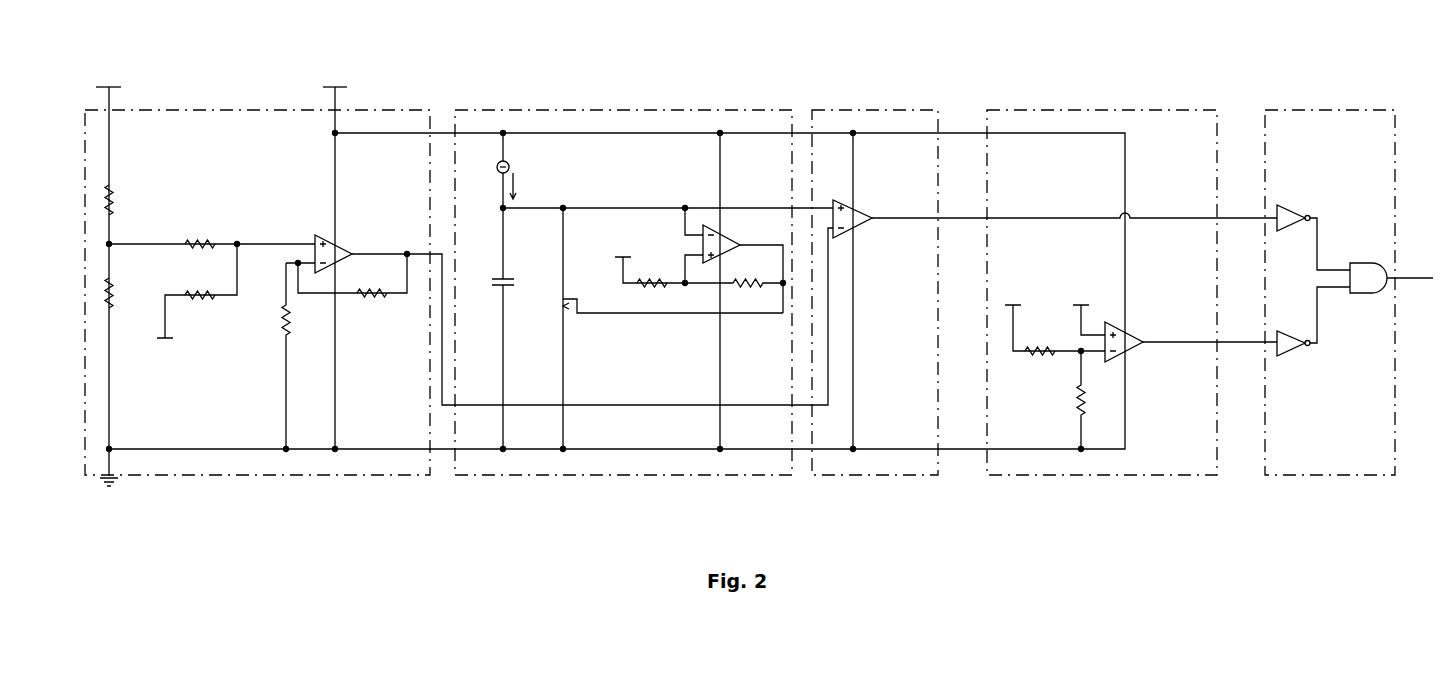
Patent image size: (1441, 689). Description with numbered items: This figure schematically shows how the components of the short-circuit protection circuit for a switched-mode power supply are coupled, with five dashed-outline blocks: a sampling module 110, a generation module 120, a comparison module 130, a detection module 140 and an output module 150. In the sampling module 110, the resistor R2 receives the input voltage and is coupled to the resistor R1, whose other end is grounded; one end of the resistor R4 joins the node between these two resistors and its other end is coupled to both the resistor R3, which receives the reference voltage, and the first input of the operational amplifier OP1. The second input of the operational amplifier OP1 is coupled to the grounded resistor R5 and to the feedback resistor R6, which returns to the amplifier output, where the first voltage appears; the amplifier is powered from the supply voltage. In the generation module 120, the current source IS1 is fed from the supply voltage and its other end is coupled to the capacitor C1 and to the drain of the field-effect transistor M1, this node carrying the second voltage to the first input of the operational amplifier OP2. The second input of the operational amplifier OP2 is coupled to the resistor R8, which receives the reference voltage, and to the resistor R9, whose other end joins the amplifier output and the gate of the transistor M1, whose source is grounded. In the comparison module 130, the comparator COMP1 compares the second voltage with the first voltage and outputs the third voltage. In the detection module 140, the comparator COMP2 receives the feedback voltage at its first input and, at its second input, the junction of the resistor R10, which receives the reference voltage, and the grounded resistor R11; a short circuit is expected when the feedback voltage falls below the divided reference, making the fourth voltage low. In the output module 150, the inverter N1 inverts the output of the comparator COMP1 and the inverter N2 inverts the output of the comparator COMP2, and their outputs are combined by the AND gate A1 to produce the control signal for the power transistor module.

The sampling module 110 is at (182, 110).
The generation module 120 is at (528, 110).
The comparison module 130 is at (878, 110).
The detection module 140 is at (1038, 110).
The output module 150 is at (1305, 110).
The resistor R1 is at (125, 293).
The resistor R2 is at (125, 200).
The resistor R3 is at (201, 312).
The resistor R4 is at (201, 260).
The resistor R5 is at (303, 356).
The resistor R6 is at (372, 278).
The resistor R8 is at (652, 270).
The resistor R9 is at (734, 270).
The resistor R10 is at (1035, 365).
The resistor R11 is at (1055, 400).
The operational amplifier OP1 is at (349, 249).
The operational amplifier OP2 is at (743, 237).
The comparator COMP1 is at (882, 234).
The comparator COMP2 is at (1153, 333).
The current source IS1 is at (526, 170).
The capacitor C1 is at (519, 328).
The field-effect transistor M1 is at (673, 328).
The inverter N1 is at (1293, 231).
The inverter N2 is at (1293, 357).
The AND gate A1 is at (1368, 293).